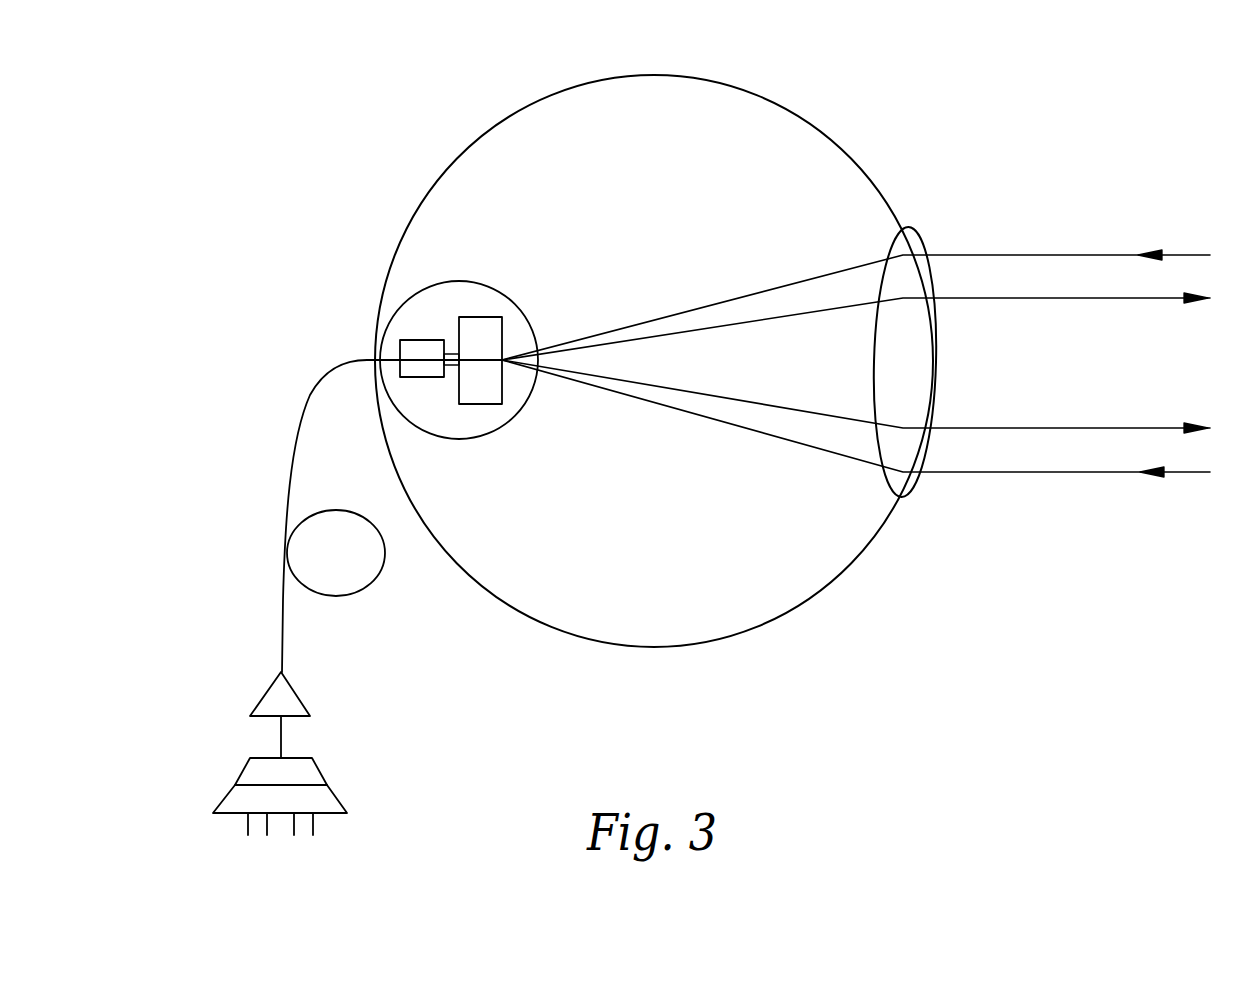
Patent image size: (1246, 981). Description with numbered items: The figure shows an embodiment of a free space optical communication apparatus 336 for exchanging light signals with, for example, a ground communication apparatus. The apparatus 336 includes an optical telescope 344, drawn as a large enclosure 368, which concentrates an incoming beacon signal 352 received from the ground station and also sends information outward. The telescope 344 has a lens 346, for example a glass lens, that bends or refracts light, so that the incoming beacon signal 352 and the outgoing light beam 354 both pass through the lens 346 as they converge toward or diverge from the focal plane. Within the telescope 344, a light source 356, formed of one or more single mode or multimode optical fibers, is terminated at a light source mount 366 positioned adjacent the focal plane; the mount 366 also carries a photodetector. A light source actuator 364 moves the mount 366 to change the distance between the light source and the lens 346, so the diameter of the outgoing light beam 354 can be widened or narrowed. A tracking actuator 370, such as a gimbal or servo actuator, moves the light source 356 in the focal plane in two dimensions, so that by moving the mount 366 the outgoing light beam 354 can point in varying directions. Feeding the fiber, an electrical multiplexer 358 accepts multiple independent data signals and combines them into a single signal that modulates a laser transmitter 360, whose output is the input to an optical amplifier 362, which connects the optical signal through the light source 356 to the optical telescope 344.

The free space optical communication apparatus 336 is at (327, 88).
The housing / enclosure 368 is at (511, 114).
The optical telescope 344 is at (783, 233).
The lens 346 is at (905, 228).
The incoming beacon signal 352 is at (1058, 255).
The outgoing light beam 354 is at (1058, 298).
The tracking actuator 370 is at (459, 281).
The light source actuator 364 is at (424, 340).
The light source mount 366 is at (477, 317).
The light source 356 is at (289, 463).
The optical amplifier 362 is at (264, 695).
The laser transmitter 360 is at (319, 772).
The electrical multiplexer 358 is at (224, 799).